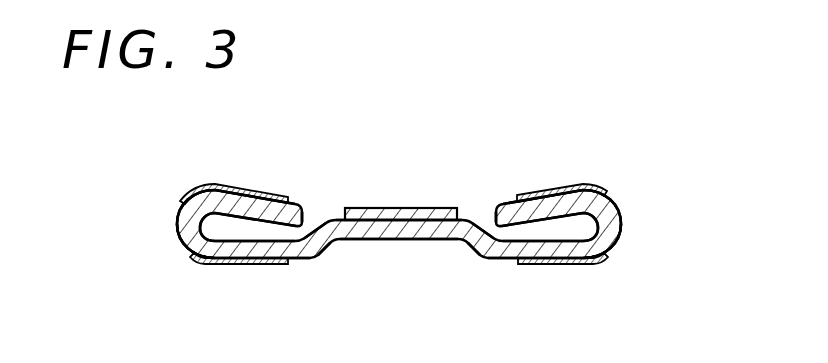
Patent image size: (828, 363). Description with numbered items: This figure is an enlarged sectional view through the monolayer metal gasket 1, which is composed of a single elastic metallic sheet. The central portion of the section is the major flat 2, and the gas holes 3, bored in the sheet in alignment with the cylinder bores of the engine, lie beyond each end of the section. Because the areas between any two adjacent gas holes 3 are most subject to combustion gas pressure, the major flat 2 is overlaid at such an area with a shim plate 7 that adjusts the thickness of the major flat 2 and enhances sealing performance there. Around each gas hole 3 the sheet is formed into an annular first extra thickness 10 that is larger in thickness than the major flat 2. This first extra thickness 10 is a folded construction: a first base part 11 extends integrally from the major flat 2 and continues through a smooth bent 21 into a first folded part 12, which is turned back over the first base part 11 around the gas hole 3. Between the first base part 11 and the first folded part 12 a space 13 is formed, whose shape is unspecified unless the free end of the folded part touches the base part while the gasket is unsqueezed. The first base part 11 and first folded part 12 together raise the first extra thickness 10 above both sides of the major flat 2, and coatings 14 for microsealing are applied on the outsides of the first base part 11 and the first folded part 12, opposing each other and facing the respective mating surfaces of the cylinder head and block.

The monolayer metal gasket 1 is at (478, 193).
The major flat 2 is at (405, 233).
The smooth bent 21 is at (323, 239).
The shim plate 7 is at (397, 212).
The gas hole 3 is at (178, 226).
The first extra thickness 10 is at (236, 272).
The first base part 11 is at (274, 261).
The first folded part 12 is at (247, 193).
The space 13 is at (222, 229).
The coating 14 is at (233, 190).